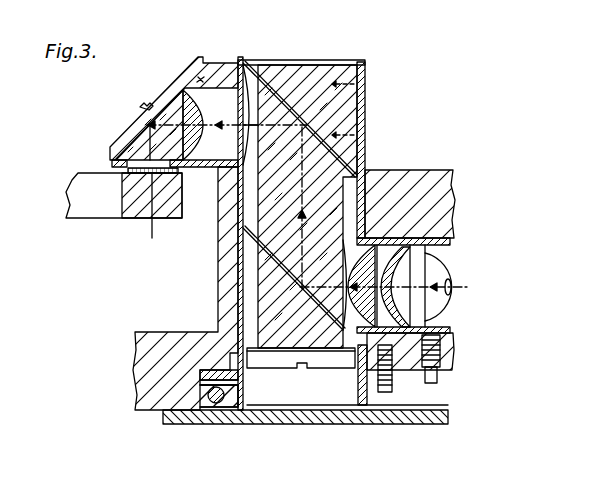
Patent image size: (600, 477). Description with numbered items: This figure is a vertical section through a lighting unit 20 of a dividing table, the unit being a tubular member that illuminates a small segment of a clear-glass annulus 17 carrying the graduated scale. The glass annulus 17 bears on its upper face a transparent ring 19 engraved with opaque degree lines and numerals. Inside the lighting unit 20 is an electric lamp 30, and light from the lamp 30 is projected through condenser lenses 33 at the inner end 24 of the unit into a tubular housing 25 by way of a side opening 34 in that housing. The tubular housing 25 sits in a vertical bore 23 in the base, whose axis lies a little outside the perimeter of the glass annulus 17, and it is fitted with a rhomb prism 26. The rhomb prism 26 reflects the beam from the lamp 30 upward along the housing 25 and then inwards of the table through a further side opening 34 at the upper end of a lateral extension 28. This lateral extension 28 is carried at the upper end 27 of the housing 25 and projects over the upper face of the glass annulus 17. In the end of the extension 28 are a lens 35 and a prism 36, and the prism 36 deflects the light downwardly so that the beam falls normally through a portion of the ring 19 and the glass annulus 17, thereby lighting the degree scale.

The clear-glass annulus 17 is at (140, 218).
The transparent ring 19 is at (128, 171).
The tubular lighting unit 20 is at (440, 237).
The vertical bore 23 is at (241, 250).
The inner end 24 is at (397, 365).
The tubular housing 25 is at (367, 172).
The rhomb prism 26 is at (270, 212).
The upper end 27 is at (255, 68).
The lateral extension 28 is at (217, 62).
The electric lamp 30 is at (440, 308).
The condenser lenses 33 is at (366, 405).
The side opening 34 is at (292, 60).
The lens 35 is at (183, 86).
The prism 36 is at (112, 150).